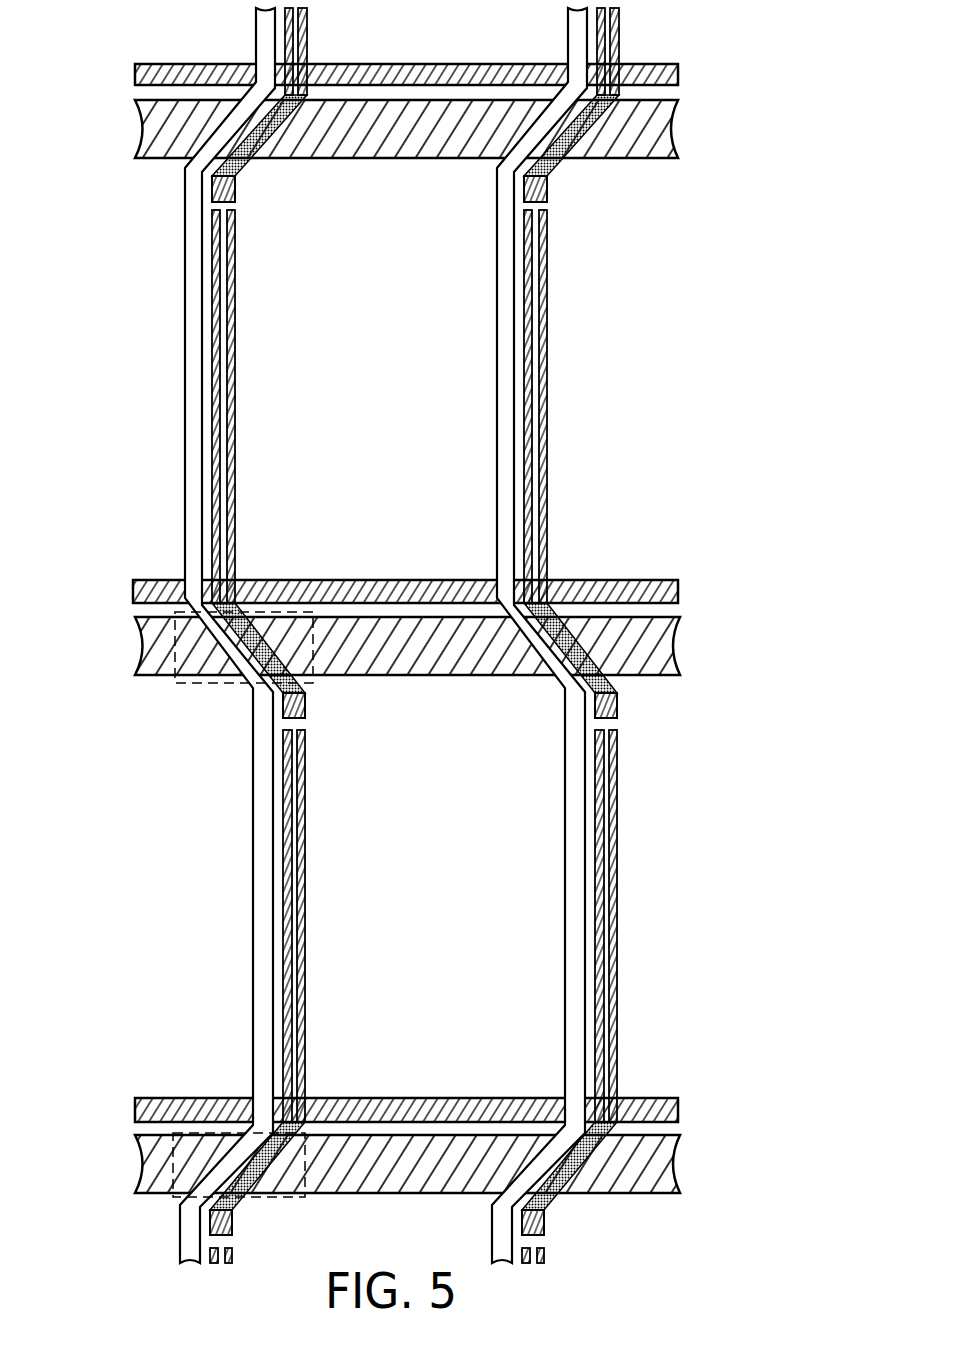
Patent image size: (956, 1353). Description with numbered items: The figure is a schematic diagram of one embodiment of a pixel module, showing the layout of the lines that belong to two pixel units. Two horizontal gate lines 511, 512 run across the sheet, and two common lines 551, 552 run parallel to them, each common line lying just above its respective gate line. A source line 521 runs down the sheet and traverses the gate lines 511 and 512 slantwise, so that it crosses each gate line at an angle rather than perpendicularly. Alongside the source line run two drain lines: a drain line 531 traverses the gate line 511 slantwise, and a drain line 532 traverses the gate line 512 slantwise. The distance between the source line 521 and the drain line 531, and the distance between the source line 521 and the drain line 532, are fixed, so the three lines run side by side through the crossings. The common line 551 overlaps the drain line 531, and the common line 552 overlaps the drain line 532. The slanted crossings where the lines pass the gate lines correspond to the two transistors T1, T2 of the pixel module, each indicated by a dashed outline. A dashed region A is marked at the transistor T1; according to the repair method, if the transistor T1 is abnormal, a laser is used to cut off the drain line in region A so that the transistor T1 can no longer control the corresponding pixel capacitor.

The gate line 511 is at (160, 1158).
The gate line 512 is at (163, 643).
The source line 521 is at (193, 307).
The drain line 531 is at (283, 716).
The drain line 532 is at (212, 201).
The common line 551 is at (160, 1108).
The common line 552 is at (165, 589).
The transistor T1 is at (218, 1133).
The transistor T2 is at (176, 605).
The region A is at (265, 1123).